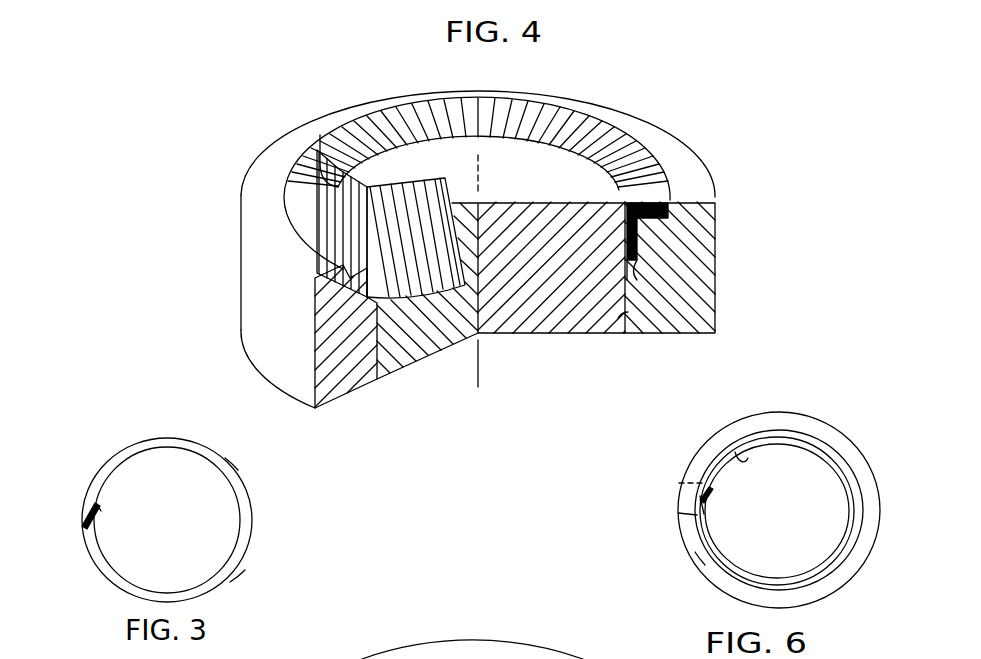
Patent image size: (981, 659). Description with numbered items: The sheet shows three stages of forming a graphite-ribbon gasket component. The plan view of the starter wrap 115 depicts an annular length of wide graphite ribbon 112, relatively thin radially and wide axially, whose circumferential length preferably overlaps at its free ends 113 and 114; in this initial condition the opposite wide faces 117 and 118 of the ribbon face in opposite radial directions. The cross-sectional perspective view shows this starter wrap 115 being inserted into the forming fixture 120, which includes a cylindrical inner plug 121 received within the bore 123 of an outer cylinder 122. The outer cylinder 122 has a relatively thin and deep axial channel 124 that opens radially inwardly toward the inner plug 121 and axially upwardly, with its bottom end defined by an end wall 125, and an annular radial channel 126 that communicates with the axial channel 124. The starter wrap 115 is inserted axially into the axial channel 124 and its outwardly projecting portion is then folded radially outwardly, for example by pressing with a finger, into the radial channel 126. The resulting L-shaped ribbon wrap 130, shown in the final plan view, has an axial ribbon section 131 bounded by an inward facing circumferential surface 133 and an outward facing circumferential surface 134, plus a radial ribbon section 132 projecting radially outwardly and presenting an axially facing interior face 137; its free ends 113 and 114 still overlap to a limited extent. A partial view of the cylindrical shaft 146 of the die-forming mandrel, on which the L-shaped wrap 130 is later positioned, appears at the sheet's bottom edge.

In FIG. 4, the wide graphite ribbon 112 is at (600, 128).
In FIG. 3, the wide graphite ribbon 112 is at (250, 522).
In FIG. 4, the free end 113 is at (645, 233).
In FIG. 3, the free end 113 is at (100, 508).
In FIG. 6, the free end 113 is at (712, 497).
In FIG. 3, the free end 114 is at (85, 507).
In FIG. 6, the free end 114 is at (680, 497).
In FIG. 4, the starter wrap 115 is at (546, 100).
In FIG. 3, the starter wrap 115 is at (236, 469).
In FIG. 4, the wide face 117 is at (327, 203).
In FIG. 3, the wide face 117 is at (245, 570).
In FIG. 4, the wide face 118 is at (362, 128).
In FIG. 3, the wide face 118 is at (218, 580).
In FIG. 4, the forming fixture 120 is at (533, 338).
In FIG. 4, the cylindrical inner plug 121 is at (590, 325).
In FIG. 4, the outer cylinder 122 is at (707, 303).
In FIG. 4, the bore 123 is at (618, 318).
In FIG. 4, the axial channel 124 is at (637, 252).
In FIG. 4, the end wall 125 is at (652, 277).
In FIG. 4, the annular radial channel 126 is at (323, 255).
In FIG. 6, the L-shaped ribbon wrap 130 is at (682, 541).
In FIG. 6, the axial ribbon section 131 is at (828, 572).
In FIG. 6, the radial ribbon section 132 is at (782, 418).
In FIG. 6, the inward facing circumferential surface 133 is at (740, 460).
In FIG. 6, the outward facing circumferential surface 134 is at (836, 452).
In FIG. 6, the interior face 137 is at (705, 565).
In FIG. 6, the cylindrical shaft 146 is at (425, 658).